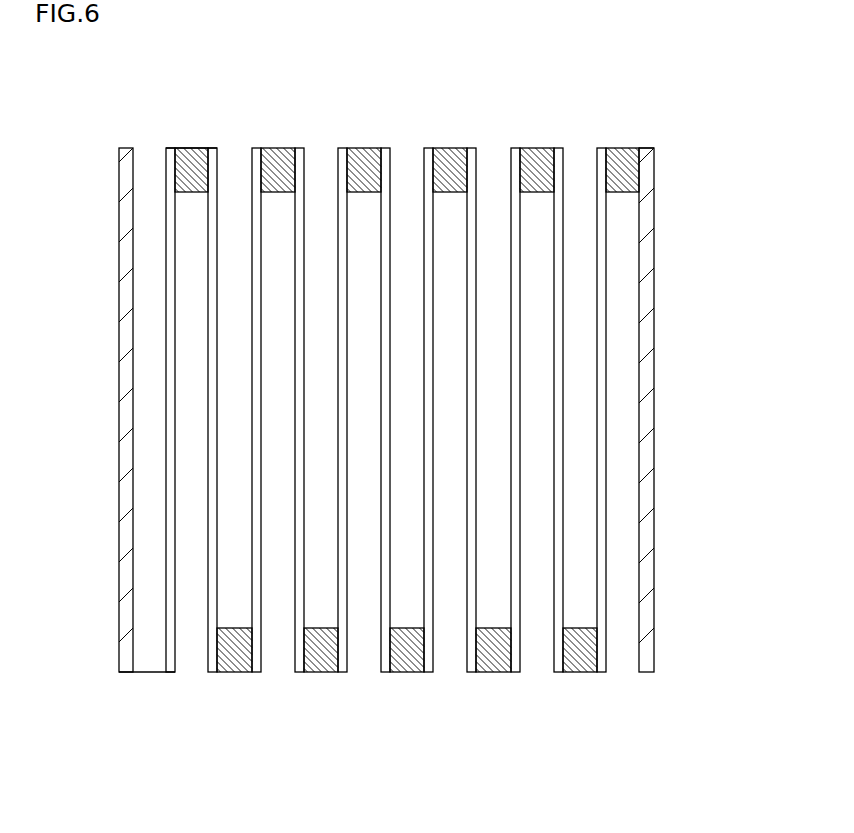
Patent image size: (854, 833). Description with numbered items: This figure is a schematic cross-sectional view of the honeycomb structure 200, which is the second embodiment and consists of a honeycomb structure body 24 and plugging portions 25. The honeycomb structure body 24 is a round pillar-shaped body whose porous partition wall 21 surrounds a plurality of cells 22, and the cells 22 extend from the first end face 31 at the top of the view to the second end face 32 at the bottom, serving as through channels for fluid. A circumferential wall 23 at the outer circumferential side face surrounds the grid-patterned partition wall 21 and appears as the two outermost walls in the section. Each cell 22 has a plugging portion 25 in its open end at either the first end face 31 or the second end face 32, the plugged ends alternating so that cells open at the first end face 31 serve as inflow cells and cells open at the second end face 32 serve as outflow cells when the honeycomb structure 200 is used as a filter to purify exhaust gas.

The honeycomb structure 200 is at (736, 61).
The partition wall 21 is at (556, 178).
The cells 22 is at (490, 207).
The circumferential wall 23 is at (120, 313).
The honeycomb structure body 24 is at (664, 151).
The plugging portion 25 is at (373, 165).
The first end face 31 is at (161, 126).
The second end face 32 is at (178, 695).